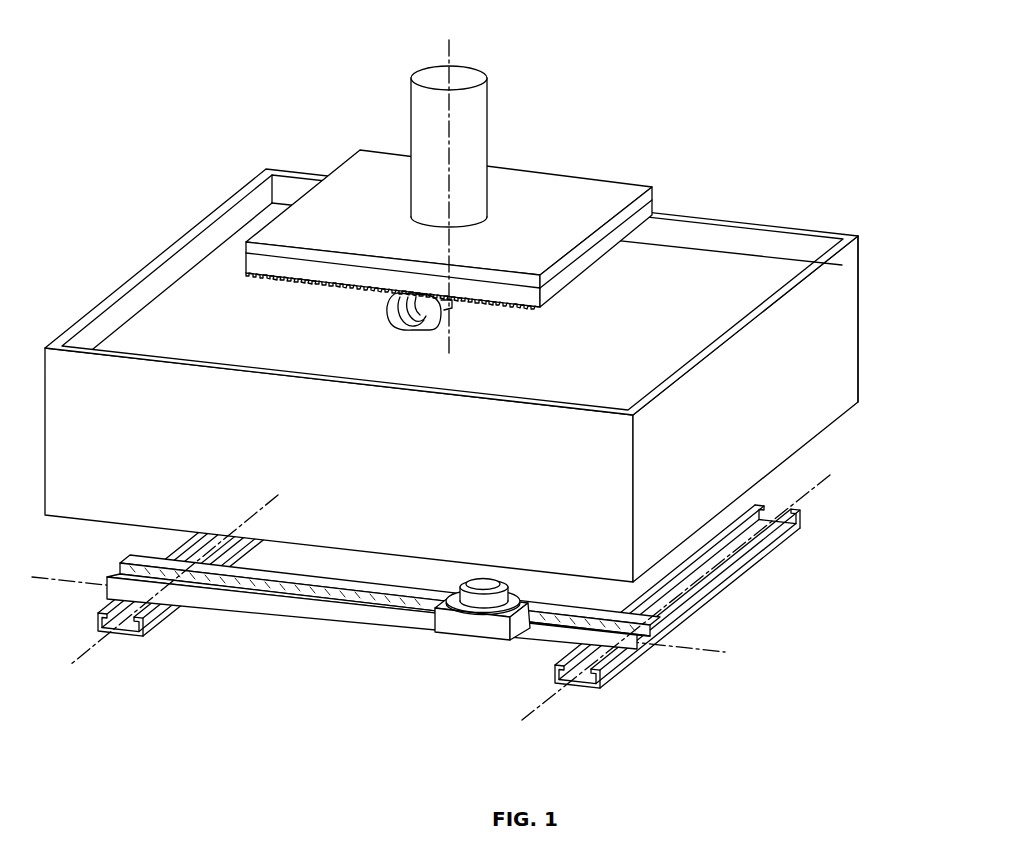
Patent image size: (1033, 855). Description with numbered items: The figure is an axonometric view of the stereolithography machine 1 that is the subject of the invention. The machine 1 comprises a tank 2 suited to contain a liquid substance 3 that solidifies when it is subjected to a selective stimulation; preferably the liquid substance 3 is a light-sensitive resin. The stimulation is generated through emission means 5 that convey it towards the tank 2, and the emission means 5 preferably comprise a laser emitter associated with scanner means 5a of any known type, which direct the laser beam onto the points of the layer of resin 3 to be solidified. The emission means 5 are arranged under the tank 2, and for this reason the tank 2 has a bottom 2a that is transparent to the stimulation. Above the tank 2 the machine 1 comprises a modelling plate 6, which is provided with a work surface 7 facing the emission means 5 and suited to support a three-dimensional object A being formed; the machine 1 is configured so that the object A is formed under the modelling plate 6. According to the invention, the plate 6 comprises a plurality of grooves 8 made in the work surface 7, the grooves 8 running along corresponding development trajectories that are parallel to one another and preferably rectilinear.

The stereolithography machine 1 is at (638, 98).
The tank 2 is at (466, 375).
The bottom 2a is at (823, 442).
The liquid substance 3 is at (755, 278).
The emission means 5 is at (458, 647).
The scanner means 5a is at (712, 628).
The modelling plate 6 is at (449, 219).
The work surface 7 is at (514, 325).
The grooves 8 is at (302, 283).
The three-dimensional object A is at (397, 323).